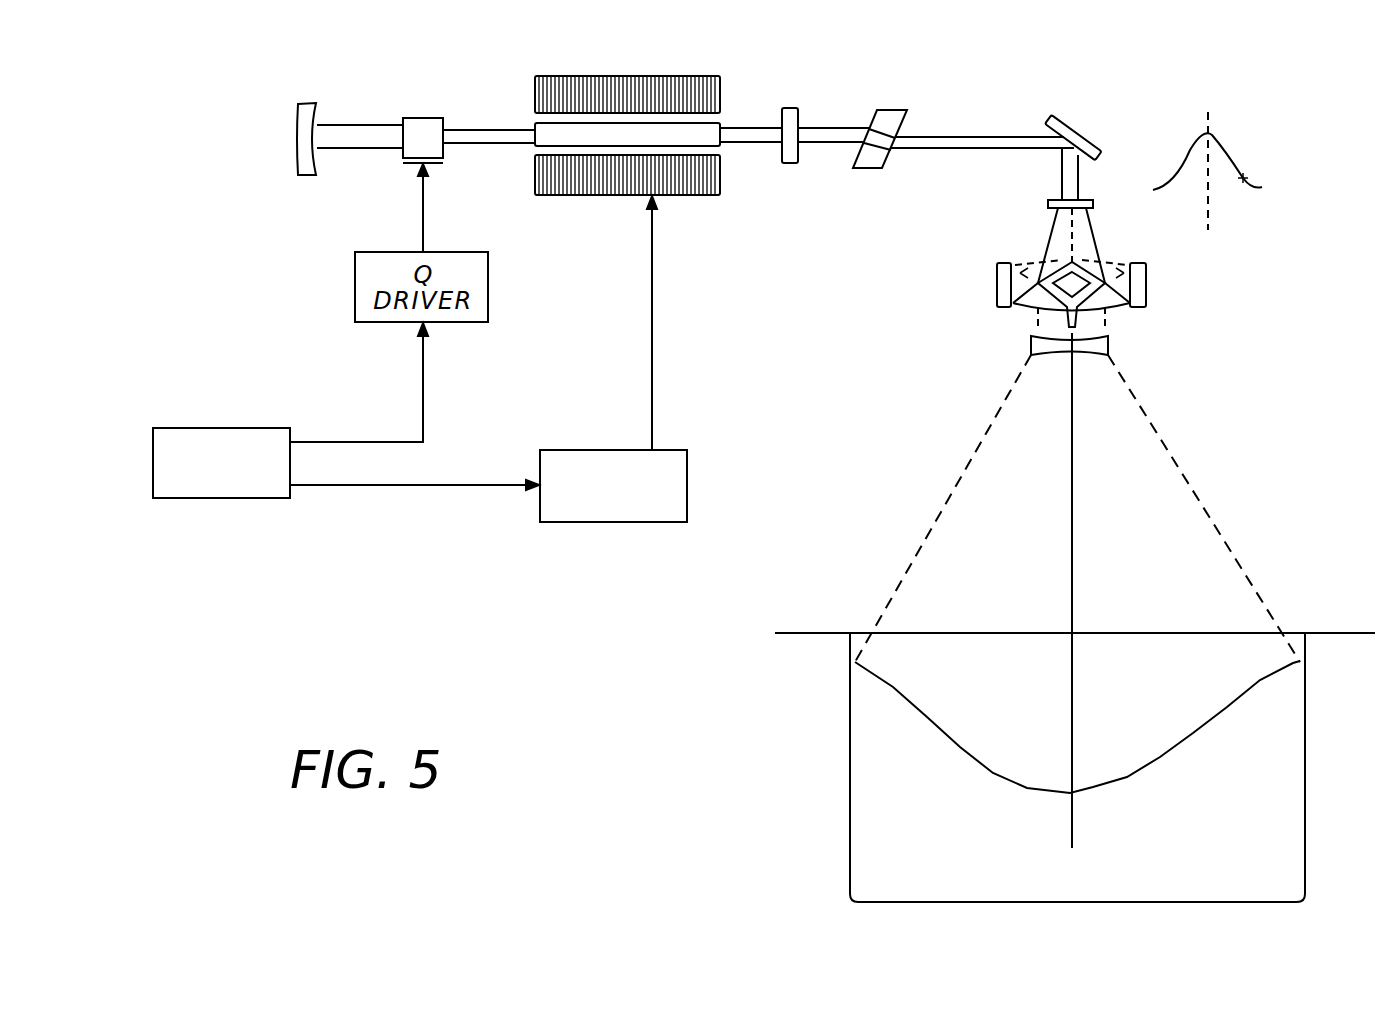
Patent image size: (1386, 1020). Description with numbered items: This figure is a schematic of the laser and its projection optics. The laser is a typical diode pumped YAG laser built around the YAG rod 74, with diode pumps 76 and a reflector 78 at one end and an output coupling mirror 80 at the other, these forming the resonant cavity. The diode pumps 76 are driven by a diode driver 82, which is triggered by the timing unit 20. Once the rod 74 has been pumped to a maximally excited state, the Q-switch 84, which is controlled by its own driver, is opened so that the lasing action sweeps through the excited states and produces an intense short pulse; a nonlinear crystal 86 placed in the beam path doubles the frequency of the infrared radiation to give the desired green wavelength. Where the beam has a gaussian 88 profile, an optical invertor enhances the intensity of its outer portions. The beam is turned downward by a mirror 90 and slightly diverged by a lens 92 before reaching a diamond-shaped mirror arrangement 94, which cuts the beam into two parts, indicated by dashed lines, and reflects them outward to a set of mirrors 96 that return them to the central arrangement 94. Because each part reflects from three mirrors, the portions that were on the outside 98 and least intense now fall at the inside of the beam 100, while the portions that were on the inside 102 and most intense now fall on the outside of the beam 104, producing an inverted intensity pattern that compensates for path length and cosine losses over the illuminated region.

The timing unit 20 is at (183, 498).
The YAG rod 74 is at (535, 135).
The diode pumps 76 is at (572, 76).
The reflector 78 is at (297, 137).
The output coupling mirror 80 is at (790, 108).
The diode driver 82 is at (624, 522).
The Q-switch 84 is at (427, 117).
The nonlinear crystal 86 is at (906, 110).
The gaussian beam 88 is at (1207, 168).
The mirror 90 is at (1074, 120).
The lens 92 is at (1057, 200).
The diamond-shaped mirror arrangement 94 is at (1030, 266).
The set of mirrors 96 is at (997, 280).
The outside parts of the beam 98 is at (1027, 222).
The inside of the beam 100 is at (1078, 508).
The inside parts of the beam 102 is at (1075, 235).
The outside of the beam 104 is at (985, 440).